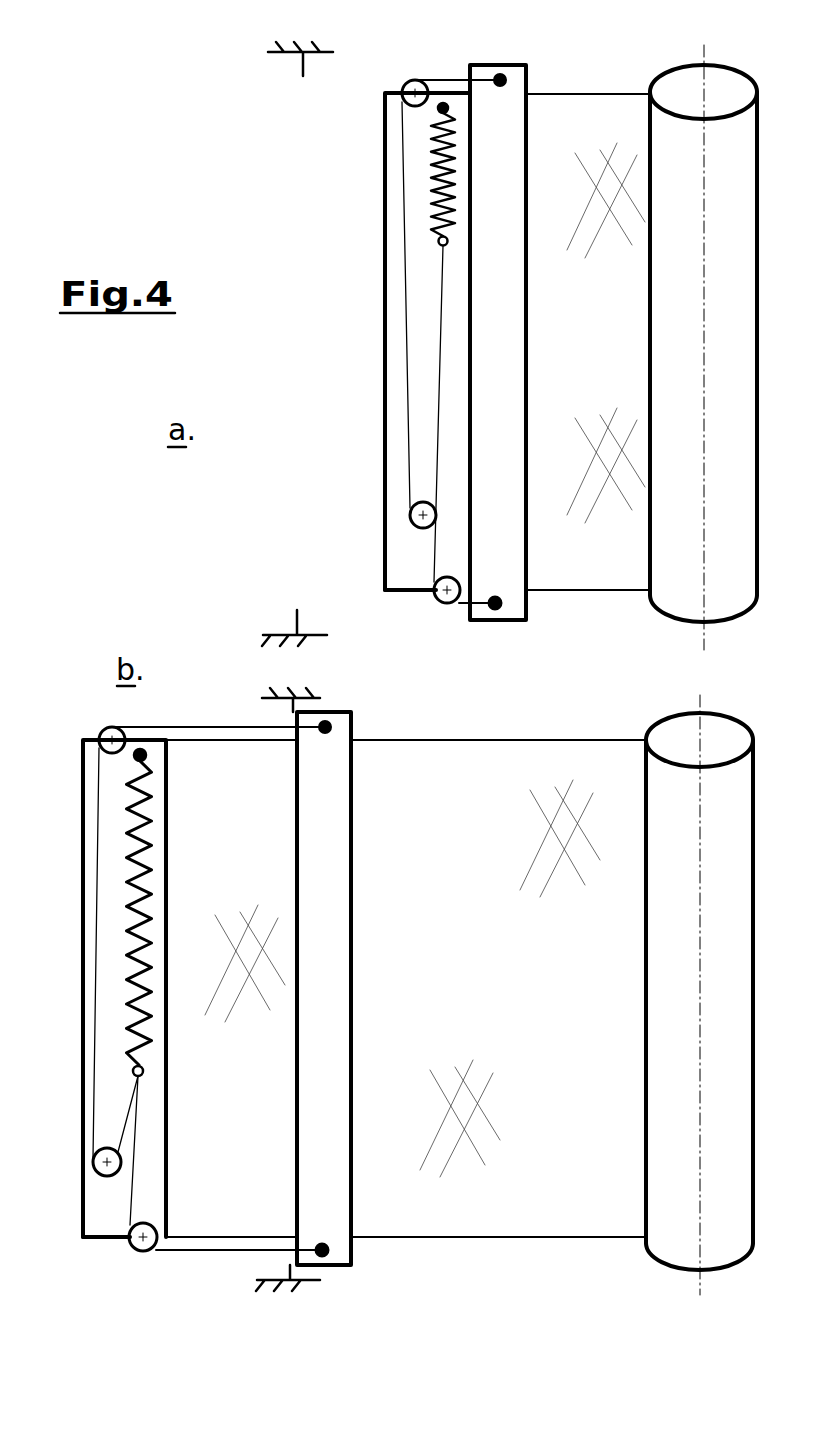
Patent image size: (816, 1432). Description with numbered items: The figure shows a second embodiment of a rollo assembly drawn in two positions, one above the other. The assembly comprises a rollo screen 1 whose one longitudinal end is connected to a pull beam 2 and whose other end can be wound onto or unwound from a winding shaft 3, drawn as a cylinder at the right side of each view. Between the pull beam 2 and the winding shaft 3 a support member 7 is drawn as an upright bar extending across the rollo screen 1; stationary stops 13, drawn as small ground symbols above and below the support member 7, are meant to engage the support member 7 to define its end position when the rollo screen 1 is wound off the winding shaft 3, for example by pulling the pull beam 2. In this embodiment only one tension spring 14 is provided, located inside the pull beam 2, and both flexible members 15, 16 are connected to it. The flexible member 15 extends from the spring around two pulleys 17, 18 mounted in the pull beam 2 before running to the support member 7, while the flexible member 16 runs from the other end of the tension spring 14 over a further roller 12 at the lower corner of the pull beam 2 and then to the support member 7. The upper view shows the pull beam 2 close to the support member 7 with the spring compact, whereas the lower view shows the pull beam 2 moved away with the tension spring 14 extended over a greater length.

The rollo screen 1 is at (590, 108).
The pull beam 2 is at (395, 298).
The winding shaft 3 is at (673, 85).
The support member 7 is at (520, 90).
The roller 12 is at (440, 600).
The stationary stops 13 is at (302, 62).
The tension spring 14 is at (430, 167).
The flexible member 15 is at (448, 79).
The flexible member 16 is at (430, 553).
The pulley 17 is at (405, 86).
The pulley 18 is at (410, 515).